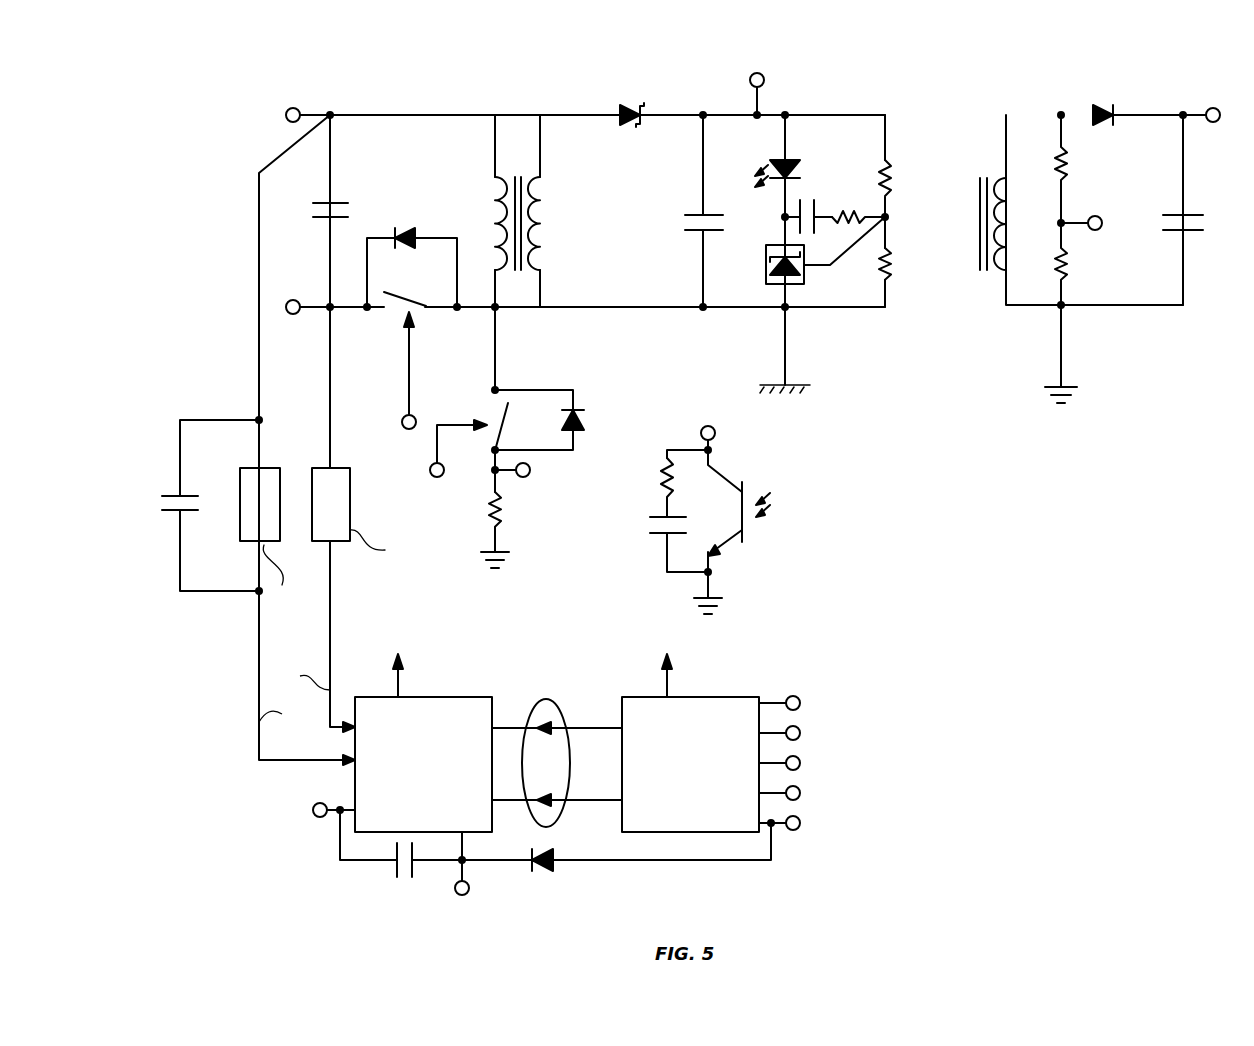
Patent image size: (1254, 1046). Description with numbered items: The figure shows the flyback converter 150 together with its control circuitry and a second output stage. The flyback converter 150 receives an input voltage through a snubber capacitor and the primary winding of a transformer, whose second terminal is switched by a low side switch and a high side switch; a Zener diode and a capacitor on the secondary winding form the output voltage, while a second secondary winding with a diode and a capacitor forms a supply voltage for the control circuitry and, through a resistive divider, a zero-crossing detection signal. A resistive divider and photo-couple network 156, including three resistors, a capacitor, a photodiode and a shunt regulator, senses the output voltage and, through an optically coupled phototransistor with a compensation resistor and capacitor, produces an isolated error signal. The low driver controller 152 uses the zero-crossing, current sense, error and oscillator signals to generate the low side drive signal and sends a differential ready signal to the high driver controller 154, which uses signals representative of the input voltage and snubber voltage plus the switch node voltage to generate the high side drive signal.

The flyback converter 150 is at (668, 485).
The low driver controller 152 is at (747, 824).
The high driver controller 154 is at (480, 824).
The resistive divider and photo-couple network 156 is at (852, 313).